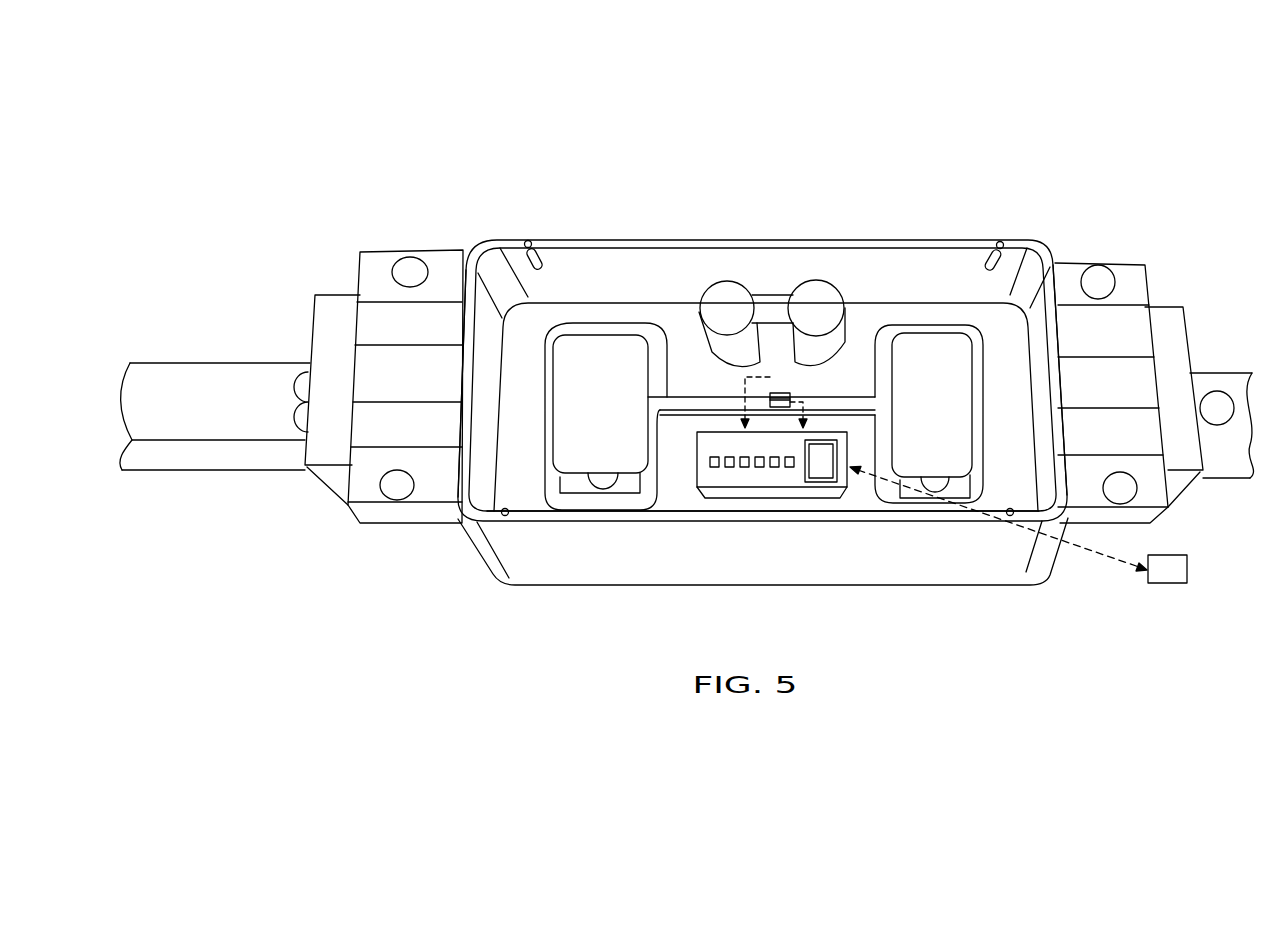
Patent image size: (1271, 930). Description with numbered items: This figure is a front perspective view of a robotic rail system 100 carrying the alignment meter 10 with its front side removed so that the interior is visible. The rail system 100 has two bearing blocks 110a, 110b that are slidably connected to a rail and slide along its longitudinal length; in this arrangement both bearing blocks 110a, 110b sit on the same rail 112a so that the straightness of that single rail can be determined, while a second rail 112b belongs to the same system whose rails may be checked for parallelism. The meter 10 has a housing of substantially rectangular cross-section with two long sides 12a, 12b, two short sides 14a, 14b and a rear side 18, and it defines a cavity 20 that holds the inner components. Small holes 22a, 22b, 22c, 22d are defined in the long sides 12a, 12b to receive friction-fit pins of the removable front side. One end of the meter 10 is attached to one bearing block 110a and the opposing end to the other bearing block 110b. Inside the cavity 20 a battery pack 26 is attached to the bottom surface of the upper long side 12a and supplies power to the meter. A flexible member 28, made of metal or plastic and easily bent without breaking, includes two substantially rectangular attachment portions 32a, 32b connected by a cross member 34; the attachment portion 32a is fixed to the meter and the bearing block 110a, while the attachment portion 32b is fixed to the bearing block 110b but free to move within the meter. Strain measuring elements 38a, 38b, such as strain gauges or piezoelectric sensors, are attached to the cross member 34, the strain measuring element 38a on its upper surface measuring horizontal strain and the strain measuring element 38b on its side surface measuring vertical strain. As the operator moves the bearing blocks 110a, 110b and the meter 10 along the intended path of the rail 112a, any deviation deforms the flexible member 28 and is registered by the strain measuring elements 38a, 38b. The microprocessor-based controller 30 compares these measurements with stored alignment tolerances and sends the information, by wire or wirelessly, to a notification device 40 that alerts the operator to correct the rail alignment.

The robotic rail system 100 is at (908, 108).
The alignment meter 10 is at (703, 223).
The long side 12a is at (750, 260).
The long side 12b is at (758, 573).
The short side 14a is at (470, 453).
The short side 14b is at (1063, 524).
The rear side 18 is at (675, 505).
The cavity 20 is at (520, 352).
The hole 22a is at (528, 244).
The hole 22b is at (1000, 243).
The hole 22c is at (1010, 515).
The hole 22d is at (507, 515).
The battery pack 26 is at (818, 300).
The flexible member 28 is at (838, 387).
The microprocessor-based controller 30 is at (783, 488).
The attachment portion 32a is at (590, 353).
The attachment portion 32b is at (925, 345).
The cross member 34 is at (837, 403).
The strain measuring element 38a is at (770, 393).
The strain measuring element 38b is at (771, 407).
The notification device 40 is at (1167, 584).
The bearing block 110a is at (380, 262).
The bearing block 110b is at (1070, 270).
The rail 112a is at (218, 380).
The rail 112b is at (1222, 425).